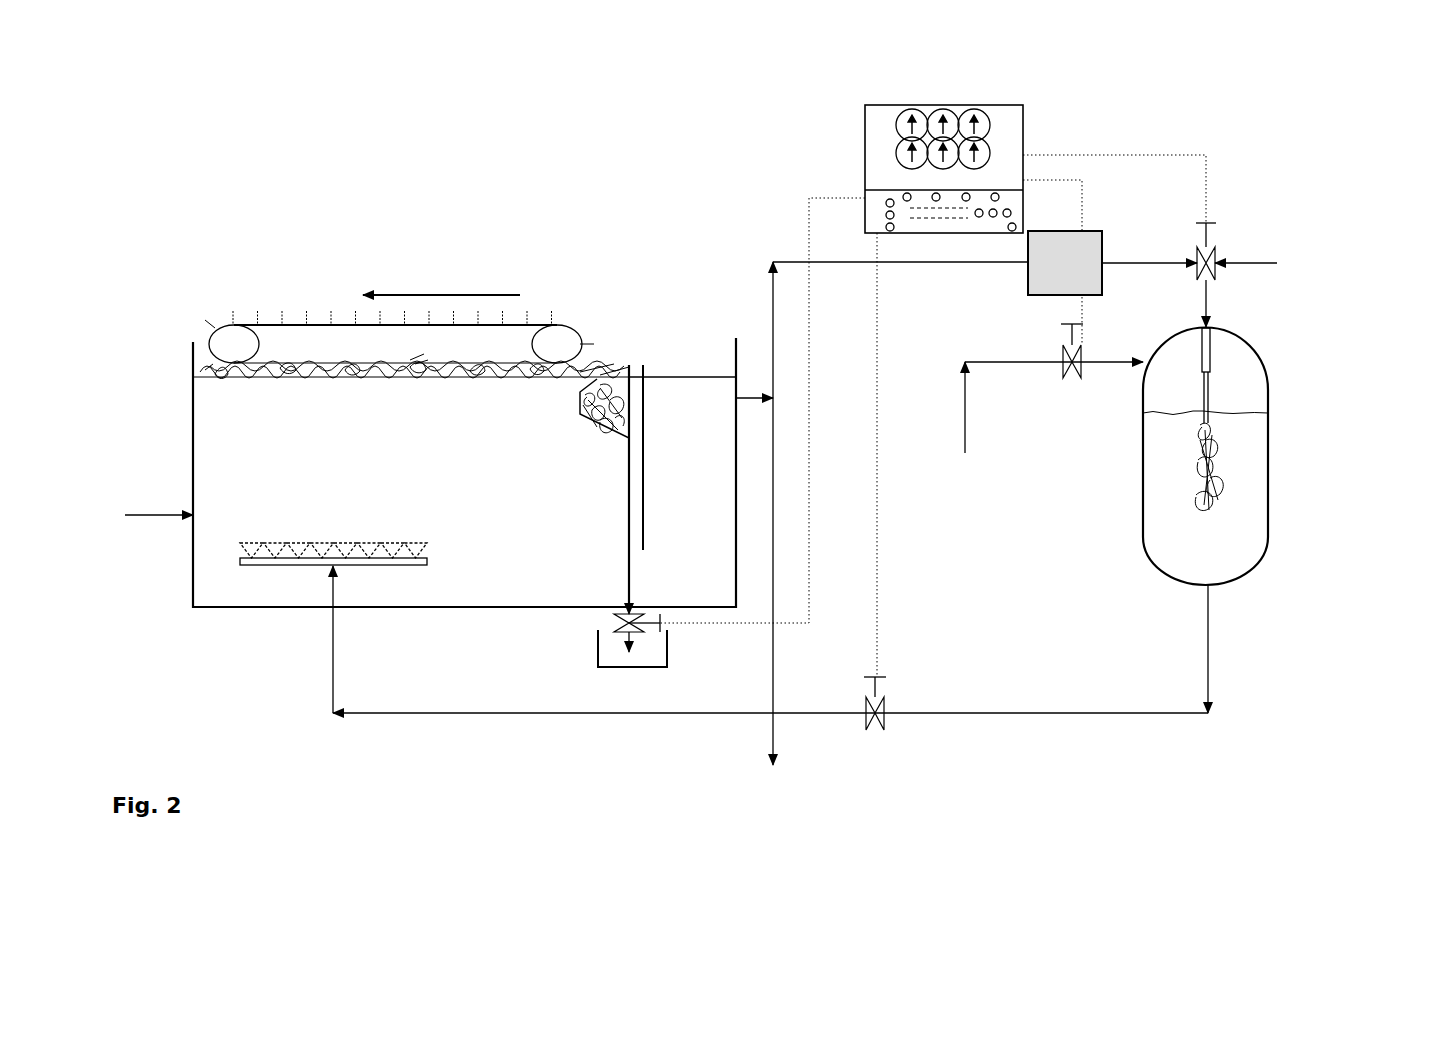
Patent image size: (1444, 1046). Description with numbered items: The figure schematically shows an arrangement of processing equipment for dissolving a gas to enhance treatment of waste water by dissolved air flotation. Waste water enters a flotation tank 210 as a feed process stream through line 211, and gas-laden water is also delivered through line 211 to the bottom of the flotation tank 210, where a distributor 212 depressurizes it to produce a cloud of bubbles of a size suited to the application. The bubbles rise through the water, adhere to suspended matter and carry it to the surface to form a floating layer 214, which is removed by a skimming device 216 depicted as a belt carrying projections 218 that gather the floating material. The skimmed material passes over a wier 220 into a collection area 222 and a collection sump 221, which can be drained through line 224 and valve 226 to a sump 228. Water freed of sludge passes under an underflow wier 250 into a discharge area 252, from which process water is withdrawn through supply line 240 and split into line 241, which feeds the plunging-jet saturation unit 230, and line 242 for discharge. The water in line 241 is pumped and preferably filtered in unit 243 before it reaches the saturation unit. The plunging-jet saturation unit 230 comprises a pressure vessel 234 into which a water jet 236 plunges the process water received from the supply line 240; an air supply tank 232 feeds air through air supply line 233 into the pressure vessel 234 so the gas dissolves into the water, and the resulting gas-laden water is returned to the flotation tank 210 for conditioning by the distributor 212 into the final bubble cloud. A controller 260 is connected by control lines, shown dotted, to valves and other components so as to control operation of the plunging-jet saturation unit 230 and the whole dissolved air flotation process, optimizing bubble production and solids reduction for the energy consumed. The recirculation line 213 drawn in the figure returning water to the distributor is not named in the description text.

The flotation tank 210 is at (464, 472).
The line 211 is at (135, 515).
The distributor 212 is at (318, 543).
The recirculation line 213 is at (333, 668).
The floating layer 214 is at (313, 380).
The skimming device 216 is at (243, 305).
The projections 218 is at (576, 323).
The wier 220 is at (630, 372).
The collection sump 221 is at (583, 405).
The collection area 222 is at (615, 365).
The line 224 is at (628, 478).
The valve 226 is at (614, 622).
The sump 228 is at (666, 650).
The plunging-jet saturation unit 230 is at (1358, 351).
The air supply tank 232 is at (921, 614).
The air supply line 233 is at (965, 383).
The pressure vessel 234 is at (1262, 476).
The water jet 236 is at (1212, 365).
The supply line 240 is at (762, 395).
The line 241 is at (925, 265).
The line 242 is at (777, 742).
The unit 243 is at (1065, 263).
The underflow wier 250 is at (643, 500).
The discharge area 252 is at (682, 421).
The controller 260 is at (865, 132).